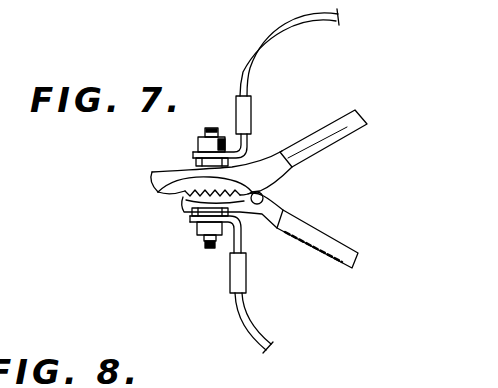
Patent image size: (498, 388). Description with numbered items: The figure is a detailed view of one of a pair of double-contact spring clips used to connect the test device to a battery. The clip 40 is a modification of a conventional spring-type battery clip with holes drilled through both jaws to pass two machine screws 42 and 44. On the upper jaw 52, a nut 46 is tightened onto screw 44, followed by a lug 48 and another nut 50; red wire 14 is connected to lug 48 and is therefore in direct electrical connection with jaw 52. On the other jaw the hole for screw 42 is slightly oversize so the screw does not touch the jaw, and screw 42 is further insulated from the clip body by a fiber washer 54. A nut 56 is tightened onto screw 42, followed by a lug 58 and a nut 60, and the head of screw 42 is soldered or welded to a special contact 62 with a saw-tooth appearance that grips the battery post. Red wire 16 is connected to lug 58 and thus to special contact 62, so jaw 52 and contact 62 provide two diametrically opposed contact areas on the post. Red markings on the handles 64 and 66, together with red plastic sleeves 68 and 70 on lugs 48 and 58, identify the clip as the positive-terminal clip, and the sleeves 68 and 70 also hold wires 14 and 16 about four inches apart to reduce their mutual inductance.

The red wire 14 is at (278, 28).
The red wire 16 is at (260, 341).
The clip 40 is at (260, 214).
The machine screw 42 is at (204, 248).
The machine screw 44 is at (212, 128).
The nut 46 is at (194, 158).
The lug 48 is at (196, 153).
The nut 50 is at (199, 140).
The jaw 52 is at (184, 175).
The fiber washer 54 is at (192, 218).
The nut 56 is at (192, 230).
The lug 58 is at (190, 228).
The nut 60 is at (205, 248).
The special contact 62 is at (188, 193).
The handle 64 is at (322, 150).
The handle 66 is at (330, 243).
The plastic sleeve 68 is at (252, 103).
The plastic sleeve 70 is at (248, 283).